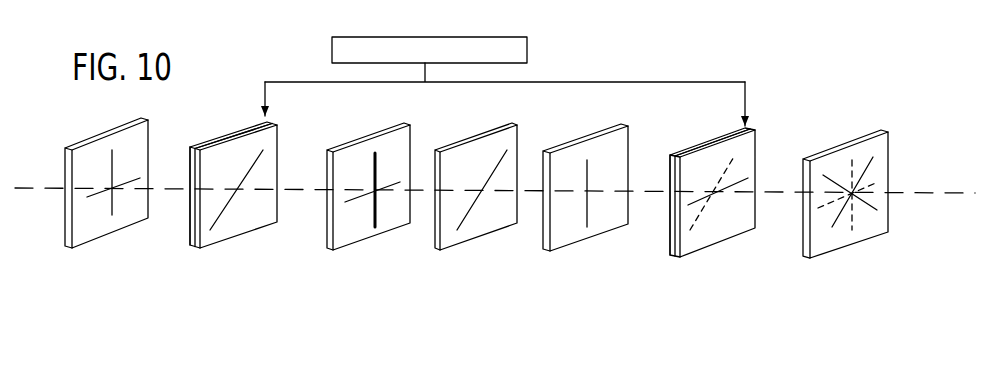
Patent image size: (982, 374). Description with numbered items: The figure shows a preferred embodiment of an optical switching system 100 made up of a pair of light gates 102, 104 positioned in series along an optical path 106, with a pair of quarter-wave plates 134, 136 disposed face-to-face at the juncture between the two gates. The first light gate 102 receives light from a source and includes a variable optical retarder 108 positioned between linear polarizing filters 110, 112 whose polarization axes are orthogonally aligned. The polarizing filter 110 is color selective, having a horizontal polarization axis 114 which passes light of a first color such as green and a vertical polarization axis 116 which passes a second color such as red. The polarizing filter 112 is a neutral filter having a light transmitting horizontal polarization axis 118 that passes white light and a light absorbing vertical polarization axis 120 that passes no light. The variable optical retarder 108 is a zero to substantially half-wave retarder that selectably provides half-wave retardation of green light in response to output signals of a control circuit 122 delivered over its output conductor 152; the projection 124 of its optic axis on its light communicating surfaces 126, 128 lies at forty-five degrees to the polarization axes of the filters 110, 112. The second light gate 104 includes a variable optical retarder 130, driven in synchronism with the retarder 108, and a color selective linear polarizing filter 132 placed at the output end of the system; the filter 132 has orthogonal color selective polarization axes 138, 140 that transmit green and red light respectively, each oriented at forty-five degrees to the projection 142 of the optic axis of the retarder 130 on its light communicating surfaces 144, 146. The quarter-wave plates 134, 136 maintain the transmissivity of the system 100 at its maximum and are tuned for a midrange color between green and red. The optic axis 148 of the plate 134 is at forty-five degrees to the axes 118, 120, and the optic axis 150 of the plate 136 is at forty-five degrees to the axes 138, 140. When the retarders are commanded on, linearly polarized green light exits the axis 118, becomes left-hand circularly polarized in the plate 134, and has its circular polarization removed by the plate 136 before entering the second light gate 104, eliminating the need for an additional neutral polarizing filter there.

The optical switching system 100 is at (478, 222).
The light gate 102 is at (468, 206).
The light gate 104 is at (722, 215).
The optical path 106 is at (53, 189).
The variable optical retarder 108 is at (240, 234).
The linear polarizing filter 110 is at (102, 237).
The linear polarizing filter 112 is at (353, 245).
The color selective horizontal polarization axis 114 is at (130, 181).
The color selective vertical polarization axis 116 is at (112, 165).
The light transmitting horizontal polarization axis 118 is at (355, 193).
The light absorbing vertical polarization axis 120 is at (380, 170).
The control circuit 122 is at (331, 41).
The projection of the optic axis 124 is at (247, 173).
The light communicating surface 126 is at (272, 133).
The light communicating surface 128 is at (190, 235).
The variable optical retarder 130 is at (715, 245).
The color selective linear polarizing filter 132 is at (842, 247).
The quarter-wave plate 134 is at (468, 243).
The quarter-wave plate 136 is at (585, 245).
The color selective polarization axis 138 is at (852, 193).
The color selective polarization axis 140 is at (866, 170).
The projection of the optic axis 142 is at (702, 198).
The light communicating surface 144 is at (748, 142).
The light communicating surface 146 is at (670, 243).
The optic axis 148 is at (493, 172).
The optic axis 150 is at (588, 167).
The output conductor 152 is at (424, 73).